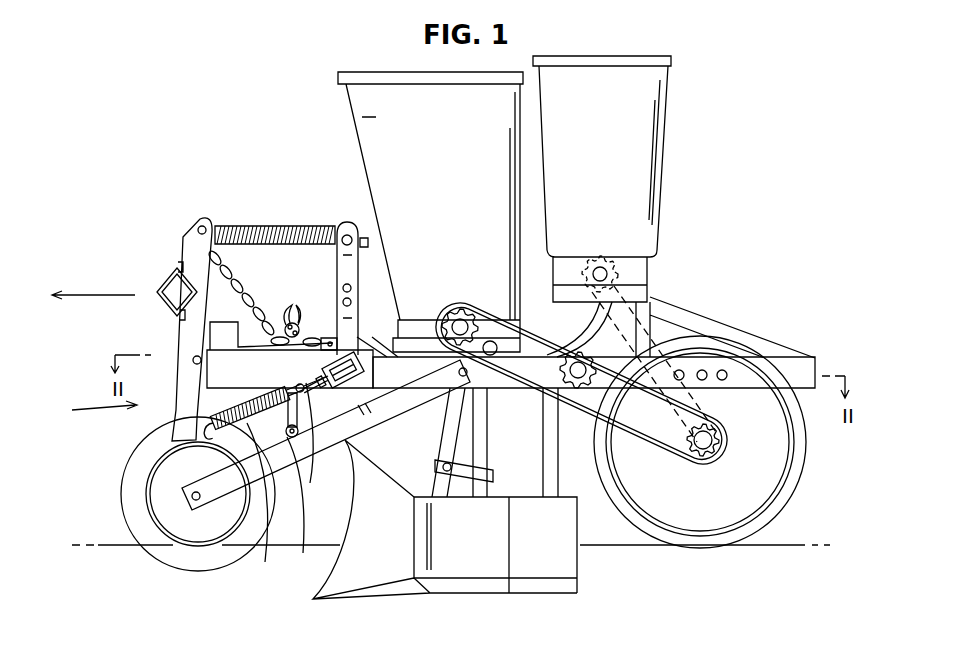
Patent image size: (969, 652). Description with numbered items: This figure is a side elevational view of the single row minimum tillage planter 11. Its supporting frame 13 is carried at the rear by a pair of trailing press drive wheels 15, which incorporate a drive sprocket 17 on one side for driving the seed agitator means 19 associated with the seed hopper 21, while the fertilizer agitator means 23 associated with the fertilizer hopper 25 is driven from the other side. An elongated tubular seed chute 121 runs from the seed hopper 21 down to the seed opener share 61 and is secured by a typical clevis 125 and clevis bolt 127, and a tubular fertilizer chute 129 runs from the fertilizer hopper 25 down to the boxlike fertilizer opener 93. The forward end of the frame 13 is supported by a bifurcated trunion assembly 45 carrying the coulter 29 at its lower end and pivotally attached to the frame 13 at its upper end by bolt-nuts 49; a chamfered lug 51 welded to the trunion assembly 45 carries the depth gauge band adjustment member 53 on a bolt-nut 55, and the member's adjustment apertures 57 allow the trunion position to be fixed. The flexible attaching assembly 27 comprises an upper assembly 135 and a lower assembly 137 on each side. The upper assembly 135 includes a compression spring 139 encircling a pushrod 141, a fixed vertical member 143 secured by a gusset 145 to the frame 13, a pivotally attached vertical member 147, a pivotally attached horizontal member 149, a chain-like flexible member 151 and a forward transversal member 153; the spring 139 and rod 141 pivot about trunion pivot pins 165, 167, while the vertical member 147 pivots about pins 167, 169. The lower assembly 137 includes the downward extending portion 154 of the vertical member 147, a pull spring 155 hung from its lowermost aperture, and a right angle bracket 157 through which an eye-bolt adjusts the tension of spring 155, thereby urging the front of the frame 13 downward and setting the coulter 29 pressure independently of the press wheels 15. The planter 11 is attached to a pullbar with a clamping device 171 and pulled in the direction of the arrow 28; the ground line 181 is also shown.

The single row minimum tillage planter 11 is at (763, 113).
The supporting frame 13 is at (795, 373).
The trailing press drive wheels 15 is at (798, 478).
The drive sprocket 17 is at (718, 424).
The seed agitator means 19 is at (448, 312).
The seed hopper 21 is at (372, 117).
The fertilizer agitator means 23 is at (588, 256).
The fertilizer hopper 25 is at (640, 178).
The flexible attaching assembly 27 is at (98, 217).
The arrow 28 is at (86, 295).
The coulter 29 is at (130, 468).
The bifurcated trunion assembly 45 is at (217, 490).
The bolt-nuts 49 is at (452, 376).
The chamfered lug 51 is at (292, 485).
The depth gauge band adjustment member 53 is at (330, 412).
The bolt-nut 55 is at (303, 473).
The adjustment apertures 57 is at (289, 334).
The seed opener share 61 is at (372, 536).
The minimum tillage fertilizer opener 93 is at (521, 536).
The seed chute 121 is at (482, 438).
The clevis 125 is at (482, 471).
The clevis bolt 127 is at (443, 461).
The fertilizer chute 129 is at (552, 468).
The upper assembly 135 is at (185, 219).
The lower assembly 137 is at (86, 410).
The compression spring 139 is at (287, 226).
The pushrod 141 is at (362, 228).
The fixed vertical member 143 is at (350, 273).
The gusset 145 is at (366, 343).
The pivotally attached vertical member 147 is at (185, 335).
The pivotally attached horizontal member 149 is at (237, 372).
The elongated flexible member 151 is at (238, 286).
The forward transversal member 153 is at (224, 328).
The downward extending portion 154 is at (180, 400).
The pull spring 155 is at (273, 480).
The right angle bracket 157 is at (346, 379).
The trunion pivot pin 165 is at (344, 232).
The trunion pivot pin 167 is at (210, 226).
The pivot pin 169 is at (191, 364).
The clamping device 171 is at (170, 283).
The ground line 181 is at (112, 547).